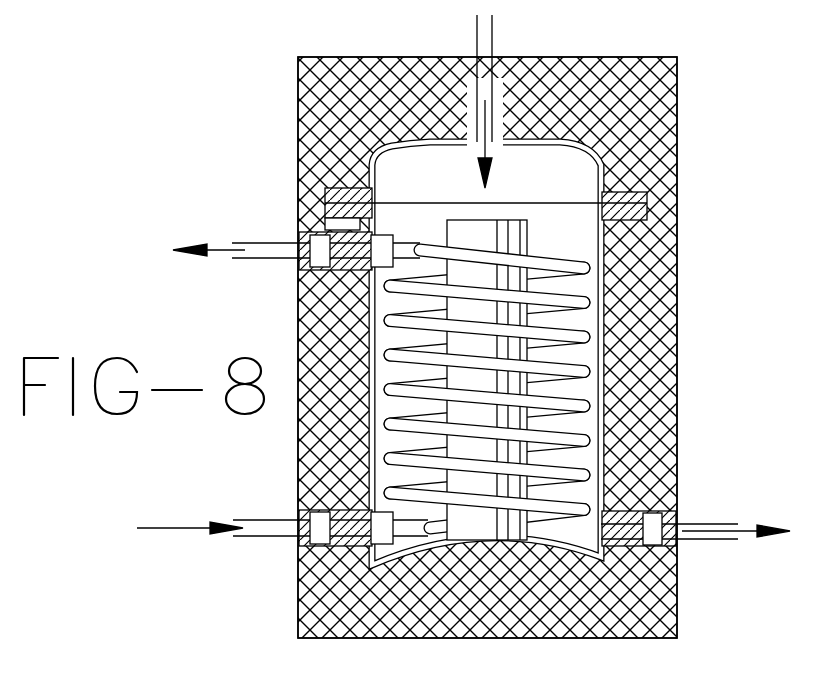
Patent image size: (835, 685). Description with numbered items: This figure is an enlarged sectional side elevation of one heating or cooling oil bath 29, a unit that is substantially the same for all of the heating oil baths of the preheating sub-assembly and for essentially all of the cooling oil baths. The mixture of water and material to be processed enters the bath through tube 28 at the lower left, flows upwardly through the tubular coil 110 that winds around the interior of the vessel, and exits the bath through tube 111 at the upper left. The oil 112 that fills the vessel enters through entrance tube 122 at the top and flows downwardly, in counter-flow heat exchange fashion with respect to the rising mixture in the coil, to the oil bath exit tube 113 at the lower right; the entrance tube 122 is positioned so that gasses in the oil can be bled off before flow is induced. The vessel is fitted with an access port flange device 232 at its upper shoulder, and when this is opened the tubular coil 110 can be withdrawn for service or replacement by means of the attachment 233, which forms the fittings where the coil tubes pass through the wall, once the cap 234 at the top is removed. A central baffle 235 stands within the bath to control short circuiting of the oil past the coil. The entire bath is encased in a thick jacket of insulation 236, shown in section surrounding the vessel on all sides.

The heating fluid bath 29 is at (172, 193).
The entrance tube 122 is at (497, 47).
The cap 234 is at (620, 58).
The insulation 236 is at (298, 82).
The access port flange device 232 is at (640, 182).
The tube 111 is at (250, 259).
The attachment 233 is at (322, 282).
The oil 112 is at (570, 243).
The tubular coil 110 is at (464, 438).
The tube 28 is at (270, 535).
The oil bath exit tube 113 is at (687, 540).
The baffle 235 is at (477, 531).